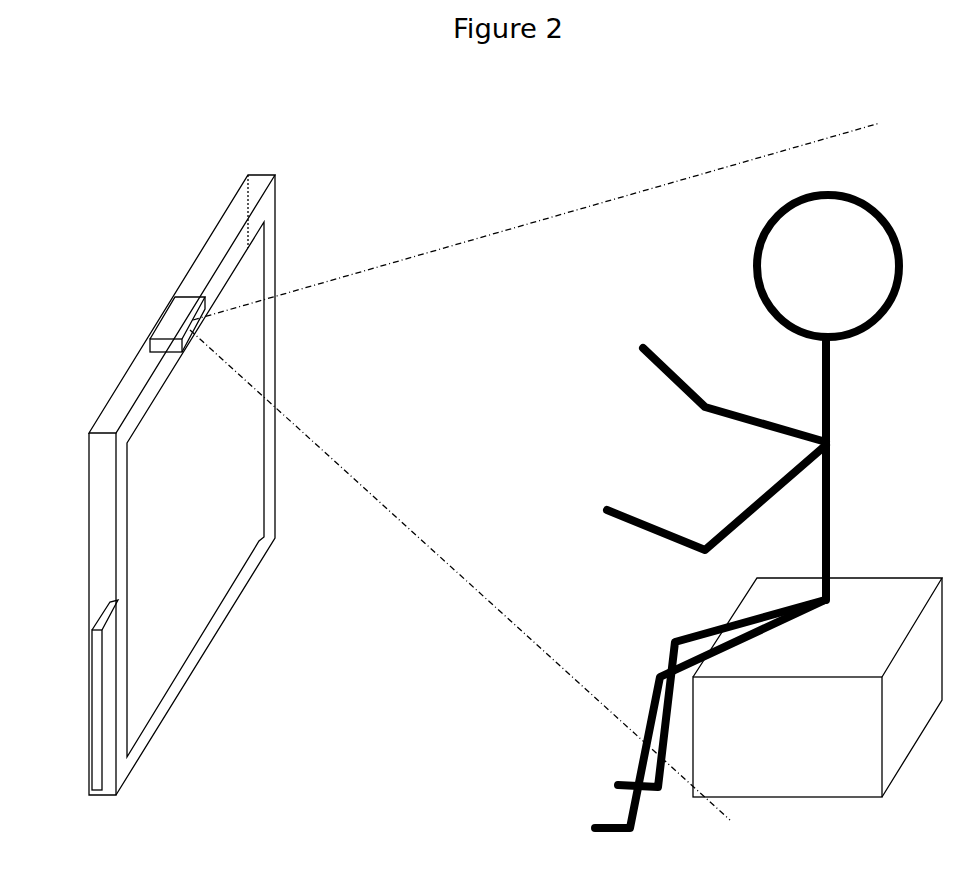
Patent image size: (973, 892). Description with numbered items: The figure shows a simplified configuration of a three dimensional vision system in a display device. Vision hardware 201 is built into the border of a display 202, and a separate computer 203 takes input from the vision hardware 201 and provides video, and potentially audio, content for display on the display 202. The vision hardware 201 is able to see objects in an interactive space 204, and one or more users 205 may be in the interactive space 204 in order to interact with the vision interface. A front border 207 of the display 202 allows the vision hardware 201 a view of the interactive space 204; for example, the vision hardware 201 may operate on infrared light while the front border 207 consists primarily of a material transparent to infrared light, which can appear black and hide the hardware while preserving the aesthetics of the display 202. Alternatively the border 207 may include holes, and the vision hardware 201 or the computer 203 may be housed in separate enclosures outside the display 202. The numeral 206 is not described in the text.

The vision hardware 201 is at (143, 347).
The display 202 is at (262, 557).
The computer 203 is at (102, 782).
The interactive space 204 is at (435, 365).
The user 205 is at (830, 435).
The display area 206 is at (252, 487).
The front border 207 is at (267, 385).